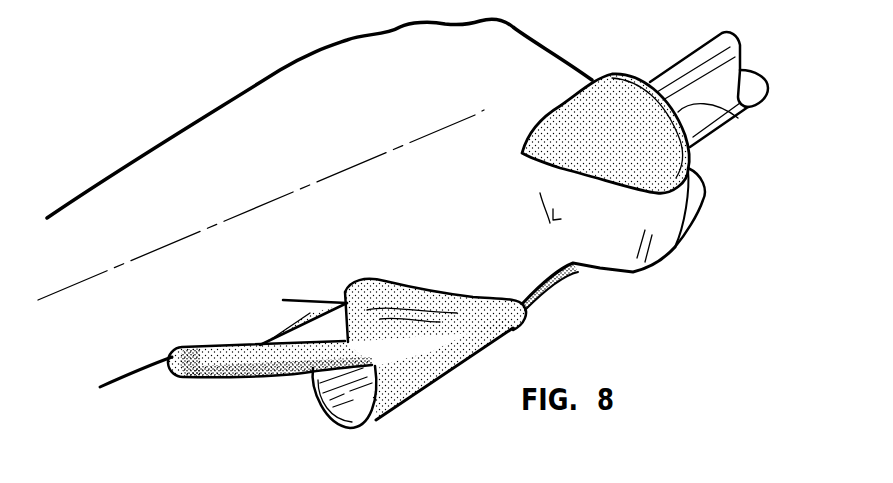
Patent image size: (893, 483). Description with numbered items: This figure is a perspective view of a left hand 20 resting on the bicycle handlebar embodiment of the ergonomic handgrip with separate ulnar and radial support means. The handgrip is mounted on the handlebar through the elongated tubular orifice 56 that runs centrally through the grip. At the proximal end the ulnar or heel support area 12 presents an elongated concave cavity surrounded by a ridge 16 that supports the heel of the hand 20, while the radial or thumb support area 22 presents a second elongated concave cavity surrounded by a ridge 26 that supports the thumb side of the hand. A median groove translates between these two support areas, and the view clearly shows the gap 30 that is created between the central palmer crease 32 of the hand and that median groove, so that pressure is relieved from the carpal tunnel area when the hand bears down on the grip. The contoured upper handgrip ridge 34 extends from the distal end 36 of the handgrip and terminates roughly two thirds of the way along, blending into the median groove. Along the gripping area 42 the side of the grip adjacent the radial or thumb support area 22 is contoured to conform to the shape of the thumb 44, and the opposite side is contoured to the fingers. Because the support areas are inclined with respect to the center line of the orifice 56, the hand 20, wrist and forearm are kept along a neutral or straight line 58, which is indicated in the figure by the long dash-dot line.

The ulnar or heel support area 12 is at (190, 389).
The ridge 16 is at (177, 349).
The hand 20 is at (215, 109).
The radial or thumb support area 22 is at (523, 325).
The ridge 26 is at (415, 288).
The gap 30 is at (270, 328).
The central palmer crease 32 is at (283, 300).
The contoured upper handgrip ridge 34 is at (600, 72).
The distal end 36 is at (737, 113).
The gripping area 42 is at (617, 157).
The thumb 44 is at (675, 248).
The elongated tubular orifice 56 is at (333, 417).
The neutral or straight line 58 is at (288, 193).